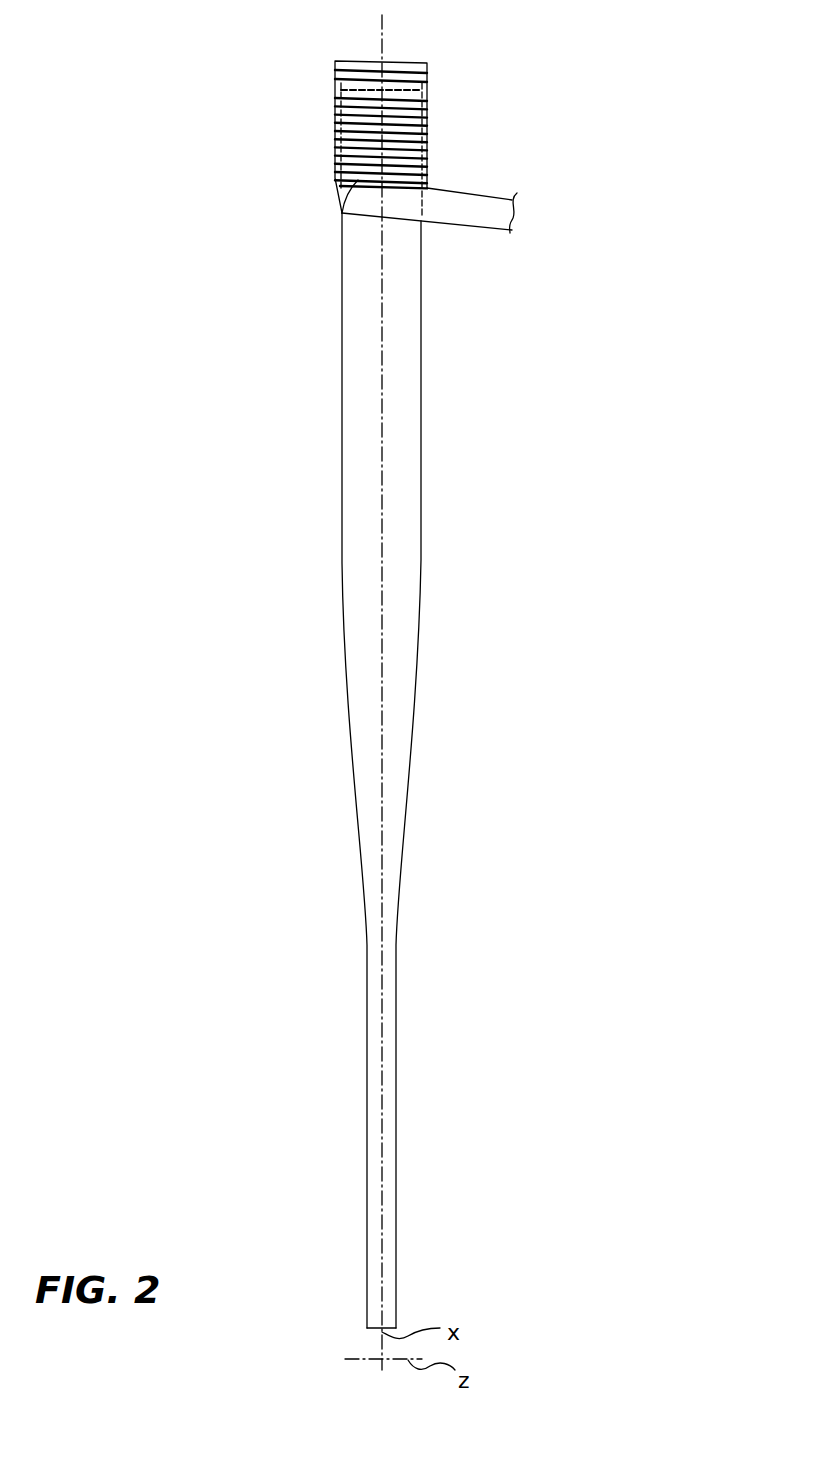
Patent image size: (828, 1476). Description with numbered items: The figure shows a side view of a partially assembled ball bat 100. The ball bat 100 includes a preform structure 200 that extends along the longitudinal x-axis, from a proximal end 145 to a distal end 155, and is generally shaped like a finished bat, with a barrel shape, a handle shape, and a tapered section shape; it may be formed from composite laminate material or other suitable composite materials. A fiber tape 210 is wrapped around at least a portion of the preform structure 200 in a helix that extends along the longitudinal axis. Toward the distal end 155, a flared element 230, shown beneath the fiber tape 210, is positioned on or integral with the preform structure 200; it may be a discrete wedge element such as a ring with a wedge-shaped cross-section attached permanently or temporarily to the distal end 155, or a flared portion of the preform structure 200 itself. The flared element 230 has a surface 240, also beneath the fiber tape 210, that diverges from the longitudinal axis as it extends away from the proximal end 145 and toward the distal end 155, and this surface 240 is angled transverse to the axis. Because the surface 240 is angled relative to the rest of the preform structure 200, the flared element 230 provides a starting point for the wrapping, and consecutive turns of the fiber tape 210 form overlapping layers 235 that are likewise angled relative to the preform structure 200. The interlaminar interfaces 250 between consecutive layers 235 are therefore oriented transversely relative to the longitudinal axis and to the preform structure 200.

The ball bat 100 is at (622, 170).
The distal end 155 is at (385, 146).
The flared element 230 is at (412, 70).
The overlapping layers 235 is at (427, 127).
The surface 240 is at (337, 78).
The interlaminar interfaces 250 is at (358, 128).
The fiber tape 210 is at (483, 215).
The preform structure 200 is at (342, 577).
The proximal end 145 is at (370, 1334).